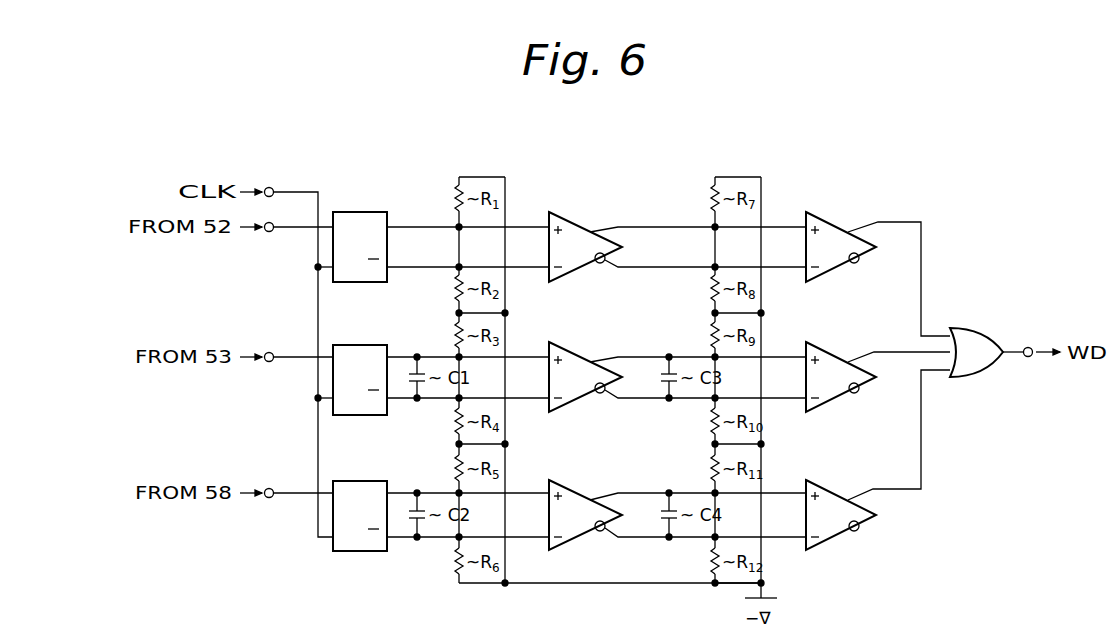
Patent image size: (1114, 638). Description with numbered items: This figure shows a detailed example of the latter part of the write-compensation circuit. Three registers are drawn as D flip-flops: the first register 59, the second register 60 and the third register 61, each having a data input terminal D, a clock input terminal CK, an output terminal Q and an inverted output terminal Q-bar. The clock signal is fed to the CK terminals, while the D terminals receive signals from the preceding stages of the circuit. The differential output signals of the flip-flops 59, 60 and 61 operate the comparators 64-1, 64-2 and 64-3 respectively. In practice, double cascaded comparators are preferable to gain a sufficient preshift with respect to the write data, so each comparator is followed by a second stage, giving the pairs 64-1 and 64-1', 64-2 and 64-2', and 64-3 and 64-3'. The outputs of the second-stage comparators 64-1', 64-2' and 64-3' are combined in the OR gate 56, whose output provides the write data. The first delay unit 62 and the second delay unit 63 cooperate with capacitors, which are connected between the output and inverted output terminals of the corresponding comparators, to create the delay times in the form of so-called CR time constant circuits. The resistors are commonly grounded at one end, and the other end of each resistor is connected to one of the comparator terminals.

The first register 59 is at (370, 212).
The second register 60 is at (370, 345).
The third register 61 is at (368, 481).
The comparator 64-1 is at (632, 230).
The comparator 64-2 is at (632, 370).
The comparator 64-3 is at (632, 505).
The comparator 64-1' is at (878, 256).
The comparator 64-2' is at (878, 362).
The comparator 64-3' is at (878, 460).
The OR gate 56 is at (977, 329).
The first delay unit 62 is at (605, 455).
The second delay unit 63 is at (598, 316).